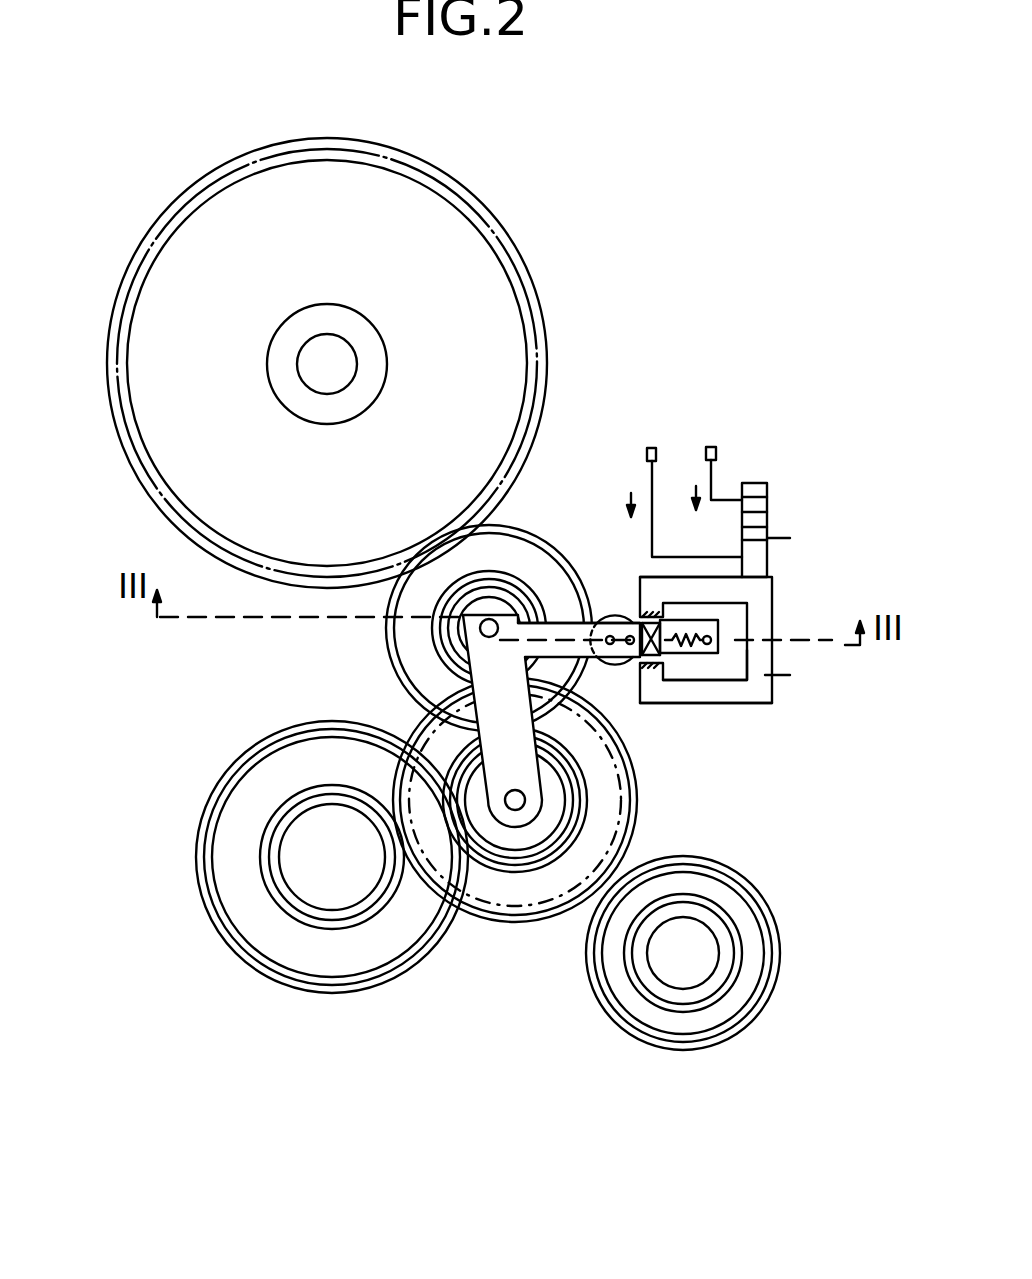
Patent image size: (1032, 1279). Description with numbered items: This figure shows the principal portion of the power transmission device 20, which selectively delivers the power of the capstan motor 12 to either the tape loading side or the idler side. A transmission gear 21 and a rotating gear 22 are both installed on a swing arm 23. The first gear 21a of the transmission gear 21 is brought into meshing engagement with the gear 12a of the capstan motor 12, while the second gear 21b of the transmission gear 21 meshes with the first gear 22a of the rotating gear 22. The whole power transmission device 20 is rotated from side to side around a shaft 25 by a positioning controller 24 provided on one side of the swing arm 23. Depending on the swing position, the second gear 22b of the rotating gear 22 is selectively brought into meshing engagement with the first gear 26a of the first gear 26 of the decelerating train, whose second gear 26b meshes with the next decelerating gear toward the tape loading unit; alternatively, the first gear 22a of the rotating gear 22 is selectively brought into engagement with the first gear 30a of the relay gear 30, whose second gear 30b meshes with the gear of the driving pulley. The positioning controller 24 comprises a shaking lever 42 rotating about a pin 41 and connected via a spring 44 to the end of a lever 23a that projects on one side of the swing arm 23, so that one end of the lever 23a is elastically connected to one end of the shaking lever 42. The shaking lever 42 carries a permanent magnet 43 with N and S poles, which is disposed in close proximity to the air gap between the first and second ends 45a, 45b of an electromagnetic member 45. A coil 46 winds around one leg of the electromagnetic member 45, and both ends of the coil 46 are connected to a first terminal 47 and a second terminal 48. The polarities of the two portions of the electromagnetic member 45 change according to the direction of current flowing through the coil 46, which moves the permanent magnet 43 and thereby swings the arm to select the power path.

The capstan motor 12 is at (484, 254).
The gear of the capstan motor 12a is at (548, 340).
The power transmission device 20 is at (477, 738).
The transmission gear 21 is at (521, 515).
The first gear of the transmission gear 21a is at (437, 600).
The second gear of the transmission gear 21b is at (500, 535).
The rotating gear 22 is at (543, 930).
The first gear of the rotating gear 22a is at (487, 905).
The second gear of the rotating gear 22b is at (577, 819).
The swing arm 23 is at (472, 712).
The lever 23a is at (572, 632).
The positioning controller 24 is at (761, 577).
The shaft 25 is at (482, 632).
The first gear 26 is at (207, 801).
The first gear of the first gear 26a is at (205, 872).
The second gear of the first gear 26b is at (272, 902).
The relay gear 30 is at (764, 887).
The first gear of the relay gear 30a is at (706, 1040).
The second gear of the relay gear 30b is at (720, 982).
The pin 41 is at (610, 645).
The shaking lever 42 is at (712, 632).
The permanent magnet 43 is at (698, 648).
The spring 44 is at (743, 677).
The electromagnetic member 45 is at (775, 597).
The first end of the electromagnetic member 45a is at (656, 690).
The second end of the electromagnetic member 45b is at (652, 588).
The coil 46 is at (770, 512).
The first terminal 47 is at (653, 448).
The second terminal 48 is at (713, 447).